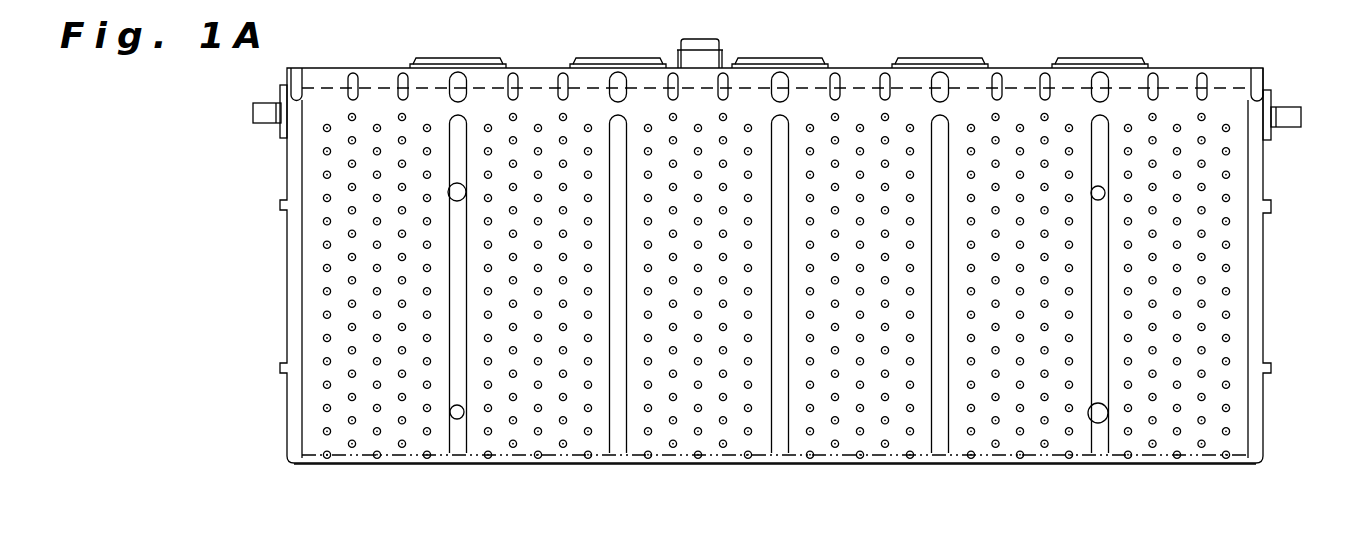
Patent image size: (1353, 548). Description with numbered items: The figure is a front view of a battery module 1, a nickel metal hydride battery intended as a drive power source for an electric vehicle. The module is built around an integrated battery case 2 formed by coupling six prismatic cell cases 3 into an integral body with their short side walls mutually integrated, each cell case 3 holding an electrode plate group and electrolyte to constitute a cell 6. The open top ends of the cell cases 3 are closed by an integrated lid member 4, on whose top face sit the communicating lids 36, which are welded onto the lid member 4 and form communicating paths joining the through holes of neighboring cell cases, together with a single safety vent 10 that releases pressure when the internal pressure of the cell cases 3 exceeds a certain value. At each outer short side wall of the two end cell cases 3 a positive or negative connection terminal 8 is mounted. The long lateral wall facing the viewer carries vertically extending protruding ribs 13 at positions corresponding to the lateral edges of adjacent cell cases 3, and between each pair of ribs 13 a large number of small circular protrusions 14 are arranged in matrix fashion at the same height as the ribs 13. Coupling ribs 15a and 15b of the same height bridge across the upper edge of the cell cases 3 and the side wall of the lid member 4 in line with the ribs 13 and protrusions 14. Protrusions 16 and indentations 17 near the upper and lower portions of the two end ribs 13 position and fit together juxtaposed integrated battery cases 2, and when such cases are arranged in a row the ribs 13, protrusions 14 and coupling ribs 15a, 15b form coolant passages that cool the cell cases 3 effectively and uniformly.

The battery module 1 is at (262, 290).
The integrated battery case 2 is at (280, 331).
The cell case 3 is at (362, 445).
The integrated lid member 4 is at (325, 76).
The cell 6 is at (374, 467).
The connection terminal 8 is at (266, 110).
The safety vent 10 is at (712, 62).
The protruding rib 13 is at (295, 250).
The circular protrusion 14 is at (325, 384).
The coupling rib 15a is at (1100, 84).
The coupling rib 15b is at (1042, 80).
The protrusion 16 is at (1103, 195).
The indentation 17 is at (448, 190).
The communicating lid 36 is at (452, 60).